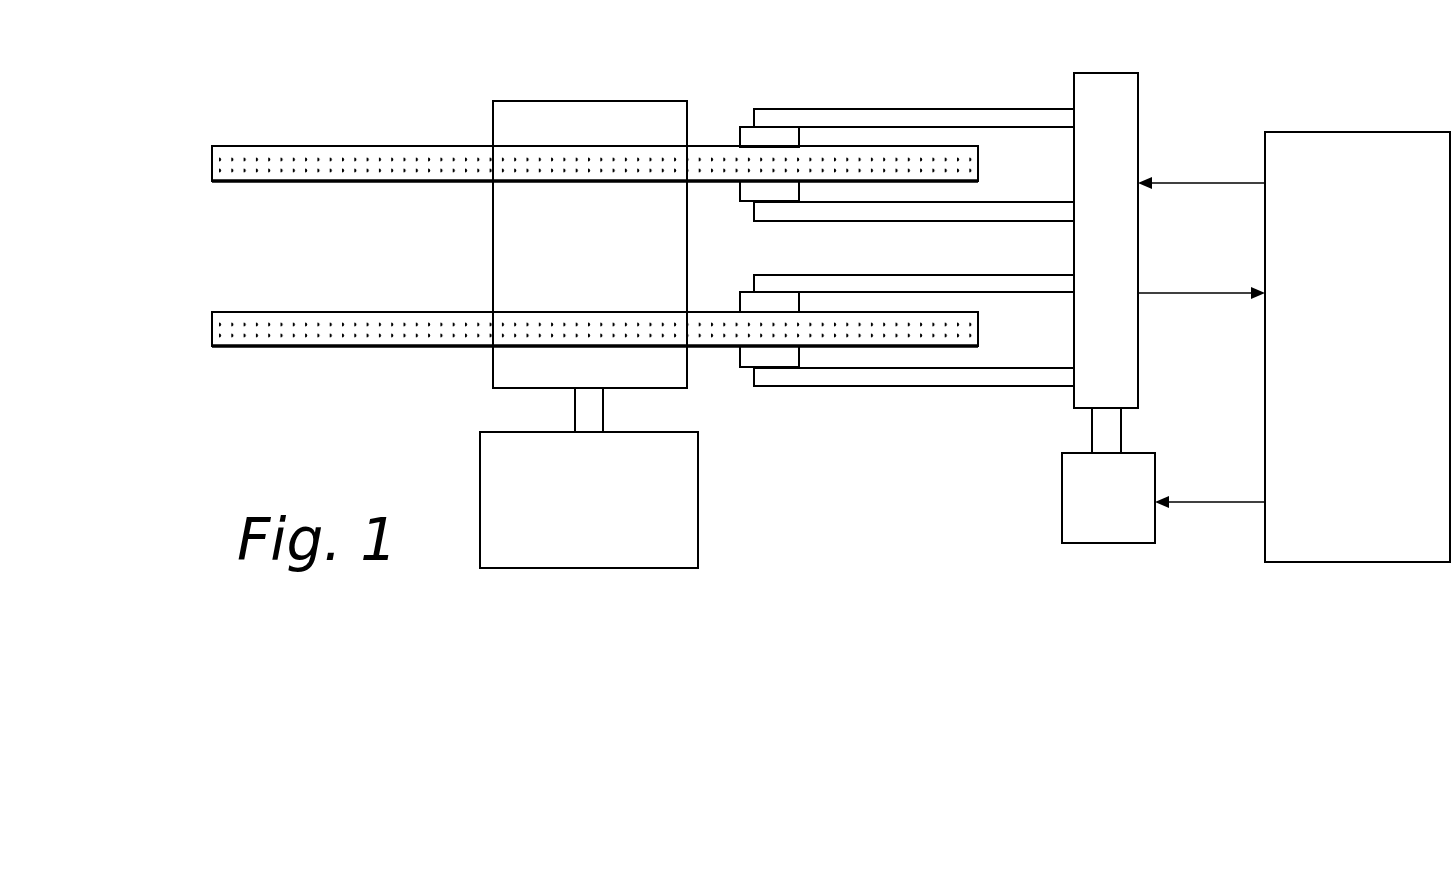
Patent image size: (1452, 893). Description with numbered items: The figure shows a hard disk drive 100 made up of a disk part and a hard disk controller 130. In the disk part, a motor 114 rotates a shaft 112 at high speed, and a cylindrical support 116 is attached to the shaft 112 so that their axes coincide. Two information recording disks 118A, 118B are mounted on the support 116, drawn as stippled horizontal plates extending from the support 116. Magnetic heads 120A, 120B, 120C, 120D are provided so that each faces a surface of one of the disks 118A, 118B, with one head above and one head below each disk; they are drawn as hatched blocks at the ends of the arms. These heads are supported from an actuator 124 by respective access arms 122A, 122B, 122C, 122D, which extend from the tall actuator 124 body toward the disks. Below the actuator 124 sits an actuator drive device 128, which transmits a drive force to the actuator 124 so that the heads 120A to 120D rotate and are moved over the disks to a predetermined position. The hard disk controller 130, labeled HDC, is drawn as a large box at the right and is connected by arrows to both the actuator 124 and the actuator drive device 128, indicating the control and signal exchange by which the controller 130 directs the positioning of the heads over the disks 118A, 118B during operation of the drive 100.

The hard disk drive 100 is at (370, 100).
The shaft 112 is at (575, 402).
The motor 114 is at (610, 530).
The cylindrical support 116 is at (545, 100).
The information recording disk 118A is at (243, 145).
The information recording disk 118B is at (245, 348).
The magnetic head 120A is at (741, 127).
The magnetic head 120B is at (747, 202).
The magnetic head 120C is at (747, 292).
The magnetic head 120D is at (747, 367).
The access arm 122A is at (875, 108).
The access arm 122B is at (920, 222).
The access arm 122C is at (897, 275).
The access arm 122D is at (885, 388).
The actuator 124 is at (1142, 88).
The actuator drive device 128 is at (1061, 511).
The hard disk controller 130 is at (1294, 347).